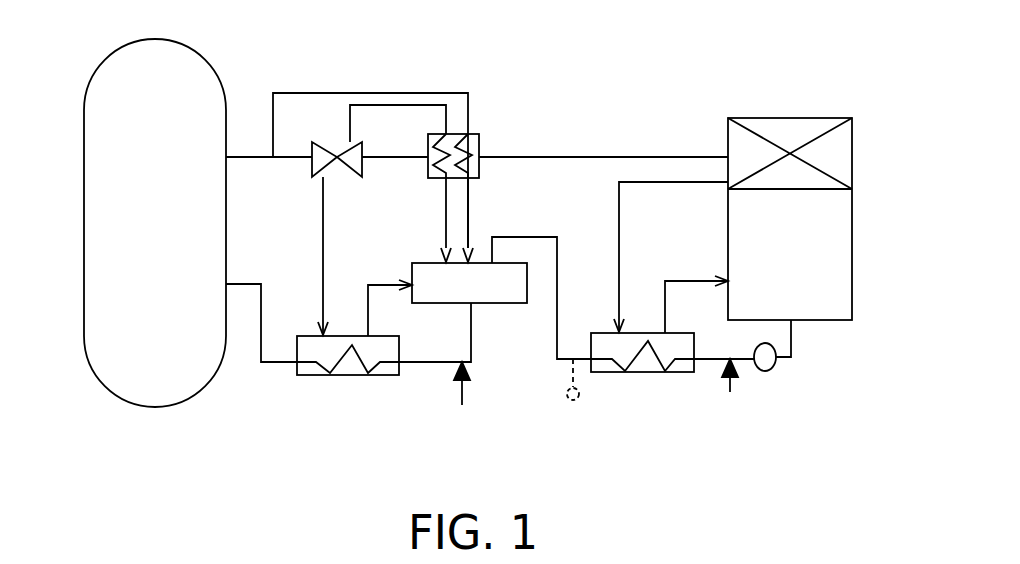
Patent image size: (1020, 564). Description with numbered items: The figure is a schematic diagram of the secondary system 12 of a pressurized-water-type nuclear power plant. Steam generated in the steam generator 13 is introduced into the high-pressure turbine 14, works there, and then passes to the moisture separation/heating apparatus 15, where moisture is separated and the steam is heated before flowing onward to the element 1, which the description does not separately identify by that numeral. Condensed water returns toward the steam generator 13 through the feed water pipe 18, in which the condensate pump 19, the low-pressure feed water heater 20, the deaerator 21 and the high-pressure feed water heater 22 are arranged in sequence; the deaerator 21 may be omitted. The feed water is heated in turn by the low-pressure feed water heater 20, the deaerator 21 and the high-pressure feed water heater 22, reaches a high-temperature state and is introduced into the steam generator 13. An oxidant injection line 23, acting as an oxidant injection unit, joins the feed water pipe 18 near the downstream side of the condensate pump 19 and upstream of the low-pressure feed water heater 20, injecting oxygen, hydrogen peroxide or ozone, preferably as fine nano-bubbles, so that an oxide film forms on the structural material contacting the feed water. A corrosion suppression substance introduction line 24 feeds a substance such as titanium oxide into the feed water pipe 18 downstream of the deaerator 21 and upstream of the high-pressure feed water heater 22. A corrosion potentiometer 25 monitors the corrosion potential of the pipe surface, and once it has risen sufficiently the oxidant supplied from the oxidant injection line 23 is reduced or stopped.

The engine 1 is at (852, 155).
The secondary system 12 is at (634, 80).
The steam generator 13 is at (84, 222).
The high-pressure turbine 14 is at (355, 176).
The moisture separation/heating apparatus 15 is at (479, 170).
The feed water pipe 18 is at (714, 359).
The condensate pump 19 is at (765, 371).
The low-pressure feed water heater 20 is at (643, 372).
The deaerator 21 is at (507, 303).
The high-pressure feed water heater 22 is at (347, 375).
The oxidant injection line 23 is at (730, 392).
The corrosion suppression substance introduction line 24 is at (462, 405).
The corrosion potentiometer 25 is at (575, 400).